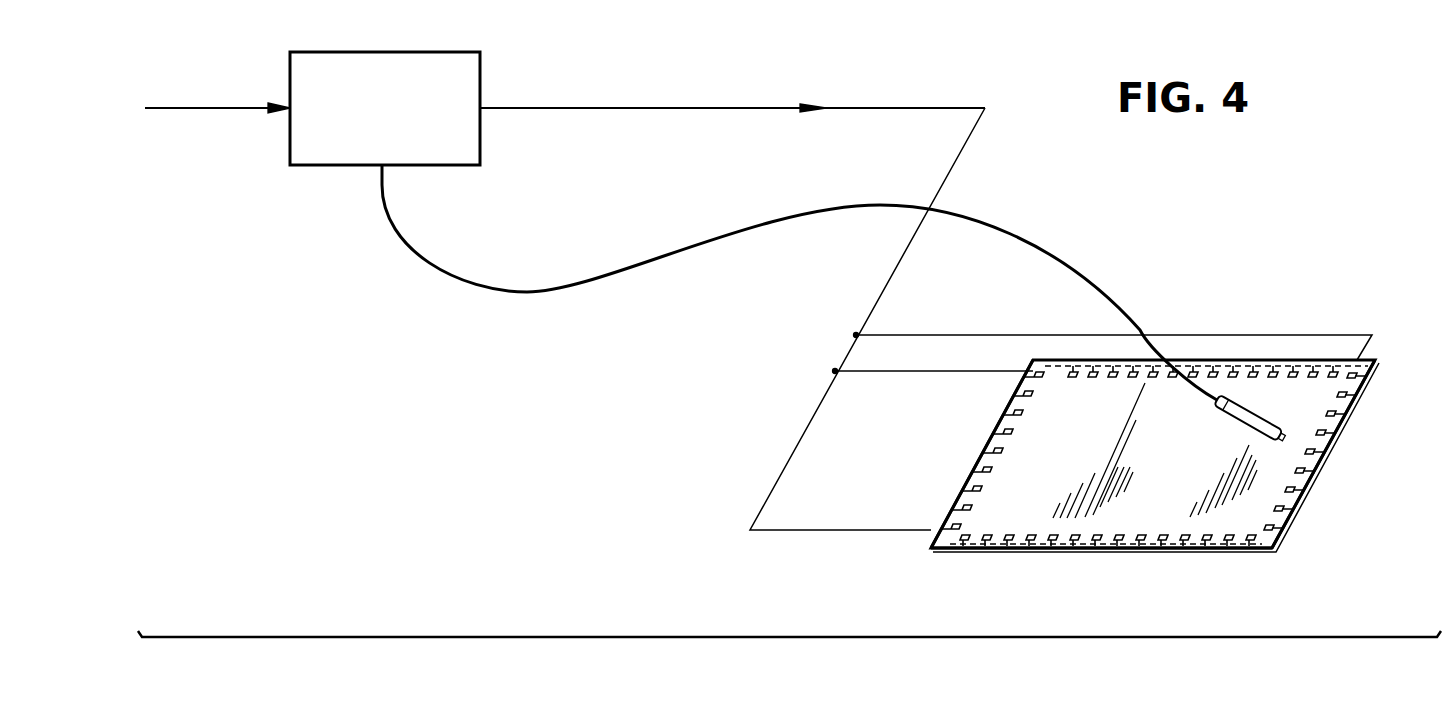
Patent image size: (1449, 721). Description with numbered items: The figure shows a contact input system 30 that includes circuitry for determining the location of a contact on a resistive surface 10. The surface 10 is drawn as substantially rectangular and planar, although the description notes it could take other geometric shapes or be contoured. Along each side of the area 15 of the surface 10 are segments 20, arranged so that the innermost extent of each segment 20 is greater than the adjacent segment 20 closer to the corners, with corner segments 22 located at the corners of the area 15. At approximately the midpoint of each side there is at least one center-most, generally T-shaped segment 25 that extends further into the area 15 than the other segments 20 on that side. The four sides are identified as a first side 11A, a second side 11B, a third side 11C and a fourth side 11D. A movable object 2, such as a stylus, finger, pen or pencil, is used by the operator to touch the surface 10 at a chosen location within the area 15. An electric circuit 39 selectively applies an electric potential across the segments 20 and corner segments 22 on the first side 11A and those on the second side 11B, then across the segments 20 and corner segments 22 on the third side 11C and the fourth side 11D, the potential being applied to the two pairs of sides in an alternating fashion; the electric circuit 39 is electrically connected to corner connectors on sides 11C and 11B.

The electric circuit 39 is at (377, 52).
The contact input system 30 is at (787, 637).
The surface 10 is at (1276, 547).
The segments 20 is at (1010, 549).
The first side 11A is at (1194, 360).
The second side 11B is at (1100, 549).
The third side 11C is at (970, 470).
The fourth side 11D is at (1328, 450).
The T-shaped segment 25 is at (1016, 432).
The corner segments 22 is at (1377, 360).
The area 15 is at (1108, 428).
The movable object 2 is at (1237, 429).